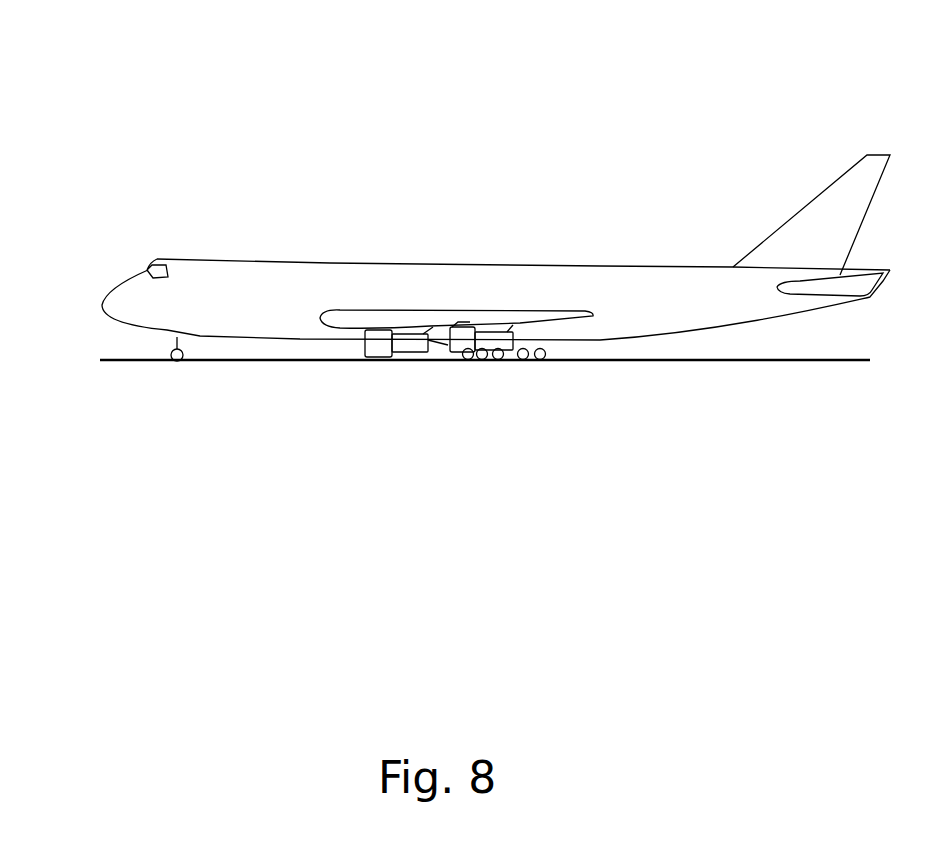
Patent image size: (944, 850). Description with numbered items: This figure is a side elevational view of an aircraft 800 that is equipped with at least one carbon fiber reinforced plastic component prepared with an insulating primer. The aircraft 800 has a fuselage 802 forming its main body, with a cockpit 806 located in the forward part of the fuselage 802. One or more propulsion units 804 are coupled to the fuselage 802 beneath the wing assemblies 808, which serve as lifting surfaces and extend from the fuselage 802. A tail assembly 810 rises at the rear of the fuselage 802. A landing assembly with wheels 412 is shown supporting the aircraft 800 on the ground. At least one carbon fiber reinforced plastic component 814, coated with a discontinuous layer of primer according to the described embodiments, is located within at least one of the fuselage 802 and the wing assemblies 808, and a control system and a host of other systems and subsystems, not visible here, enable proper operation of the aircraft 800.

The aircraft 800 is at (196, 70).
The fuselage 802 is at (515, 267).
The propulsion units 804 is at (375, 340).
The cockpit 806 is at (148, 265).
The wing assemblies 808 is at (347, 316).
The tail assembly 810 is at (807, 225).
The carbon fiber reinforced plastic component 814 is at (452, 322).
The landing gear wheels 412 is at (503, 357).